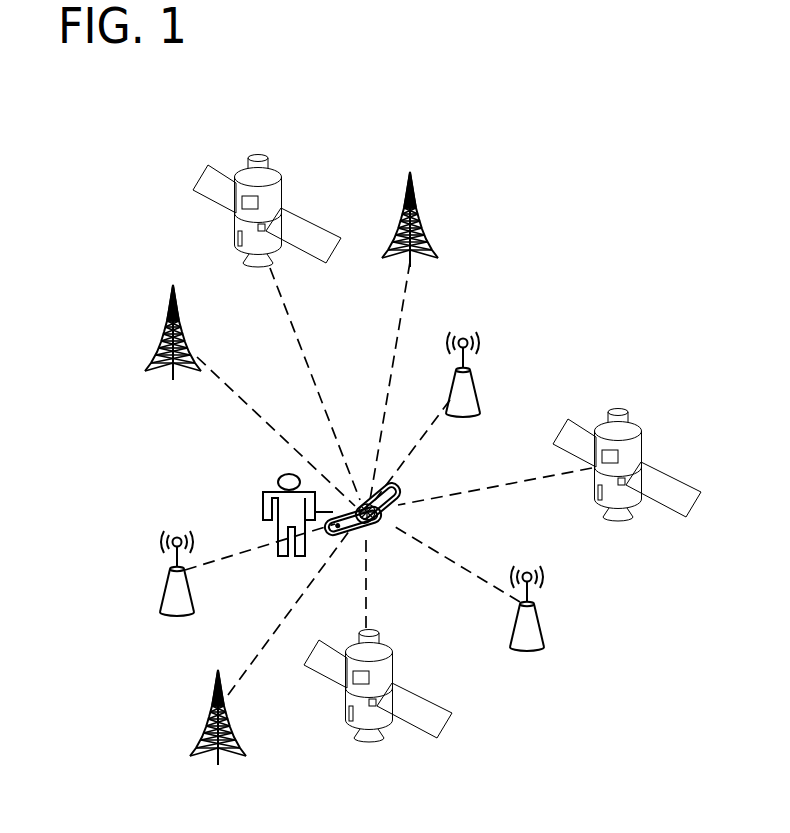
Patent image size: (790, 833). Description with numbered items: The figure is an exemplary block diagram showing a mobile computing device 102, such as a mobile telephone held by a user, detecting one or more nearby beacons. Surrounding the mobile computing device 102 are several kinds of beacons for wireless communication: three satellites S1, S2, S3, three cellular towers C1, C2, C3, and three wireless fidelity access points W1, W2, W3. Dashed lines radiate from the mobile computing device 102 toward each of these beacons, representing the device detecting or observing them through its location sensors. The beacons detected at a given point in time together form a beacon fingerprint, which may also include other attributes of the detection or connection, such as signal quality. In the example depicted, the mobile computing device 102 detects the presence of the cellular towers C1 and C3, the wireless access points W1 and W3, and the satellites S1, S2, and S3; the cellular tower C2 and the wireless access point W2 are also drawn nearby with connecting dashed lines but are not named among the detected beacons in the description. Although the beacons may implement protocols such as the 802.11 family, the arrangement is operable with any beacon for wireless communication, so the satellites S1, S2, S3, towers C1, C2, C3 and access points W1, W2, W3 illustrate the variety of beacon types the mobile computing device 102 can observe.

The mobile computing device 102 is at (380, 524).
The satellite beacon S1 is at (276, 328).
The satellite beacon S2 is at (549, 472).
The satellite beacon S3 is at (378, 658).
The cellular tower beacon C1 is at (402, 336).
The cellular tower beacon C2 is at (270, 668).
The cellular tower beacon C3 is at (250, 395).
The wireless access point beacon W1 is at (429, 416).
The wireless access point beacon W2 is at (470, 608).
The wireless access point beacon W3 is at (247, 589).